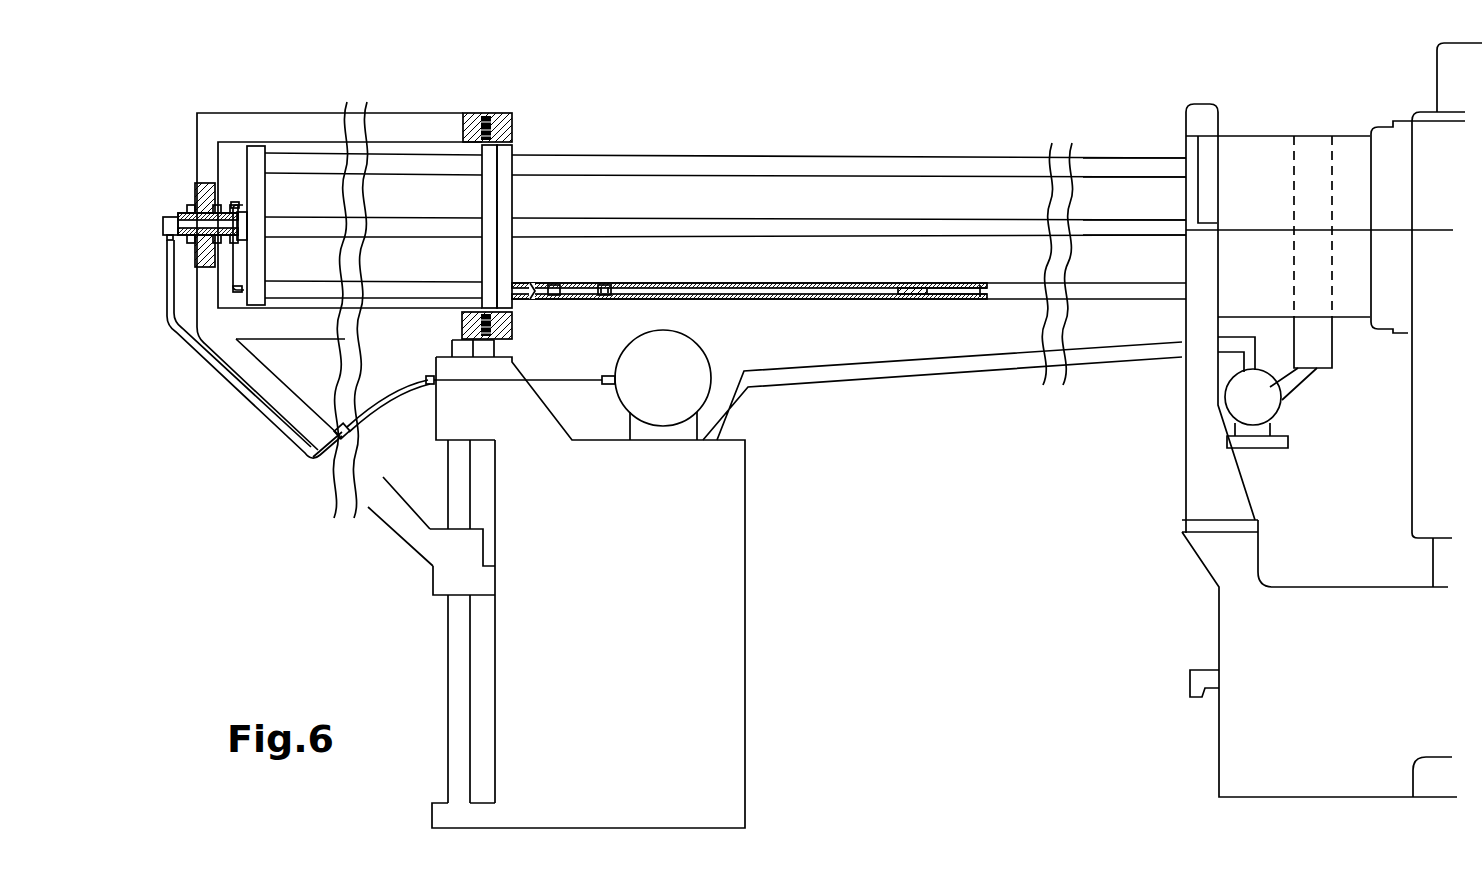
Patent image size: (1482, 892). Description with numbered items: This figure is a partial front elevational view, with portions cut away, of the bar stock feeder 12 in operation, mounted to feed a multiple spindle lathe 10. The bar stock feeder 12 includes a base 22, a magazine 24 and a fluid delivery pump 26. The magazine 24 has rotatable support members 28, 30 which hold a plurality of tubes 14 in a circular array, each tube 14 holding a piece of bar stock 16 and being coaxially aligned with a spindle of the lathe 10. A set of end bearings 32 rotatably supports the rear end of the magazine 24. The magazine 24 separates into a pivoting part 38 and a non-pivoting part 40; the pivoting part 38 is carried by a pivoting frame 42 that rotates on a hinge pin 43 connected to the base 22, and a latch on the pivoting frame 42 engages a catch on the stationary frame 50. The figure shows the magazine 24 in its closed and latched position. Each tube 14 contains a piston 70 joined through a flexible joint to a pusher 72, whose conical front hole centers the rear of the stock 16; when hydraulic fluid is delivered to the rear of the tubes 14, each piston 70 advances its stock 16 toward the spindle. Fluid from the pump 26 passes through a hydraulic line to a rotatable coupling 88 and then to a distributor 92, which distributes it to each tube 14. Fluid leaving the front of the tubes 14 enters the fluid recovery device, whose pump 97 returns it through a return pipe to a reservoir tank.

The multiple spindle lathe 10 is at (1355, 109).
The bar stock feeder 12 is at (895, 116).
The tubes 14 is at (290, 287).
The bar stock 16 is at (962, 293).
The base 22 is at (673, 725).
The magazine 24 is at (629, 152).
The fluid delivery pump 26 is at (682, 387).
The rotatable support member 28 is at (505, 197).
The rotatable support member 30 is at (483, 205).
The end bearings 32 is at (183, 250).
The pivoting part 38 is at (478, 110).
The non-pivoting part 40 is at (760, 152).
The pivoting frame 42 is at (237, 128).
The hinge pin 43 is at (457, 488).
The stationary frame 50 is at (508, 338).
The piston 70 is at (582, 290).
The pusher 72 is at (840, 290).
The rotatable coupling 88 is at (171, 215).
The distributor 92 is at (253, 305).
The pump 97 is at (1250, 400).